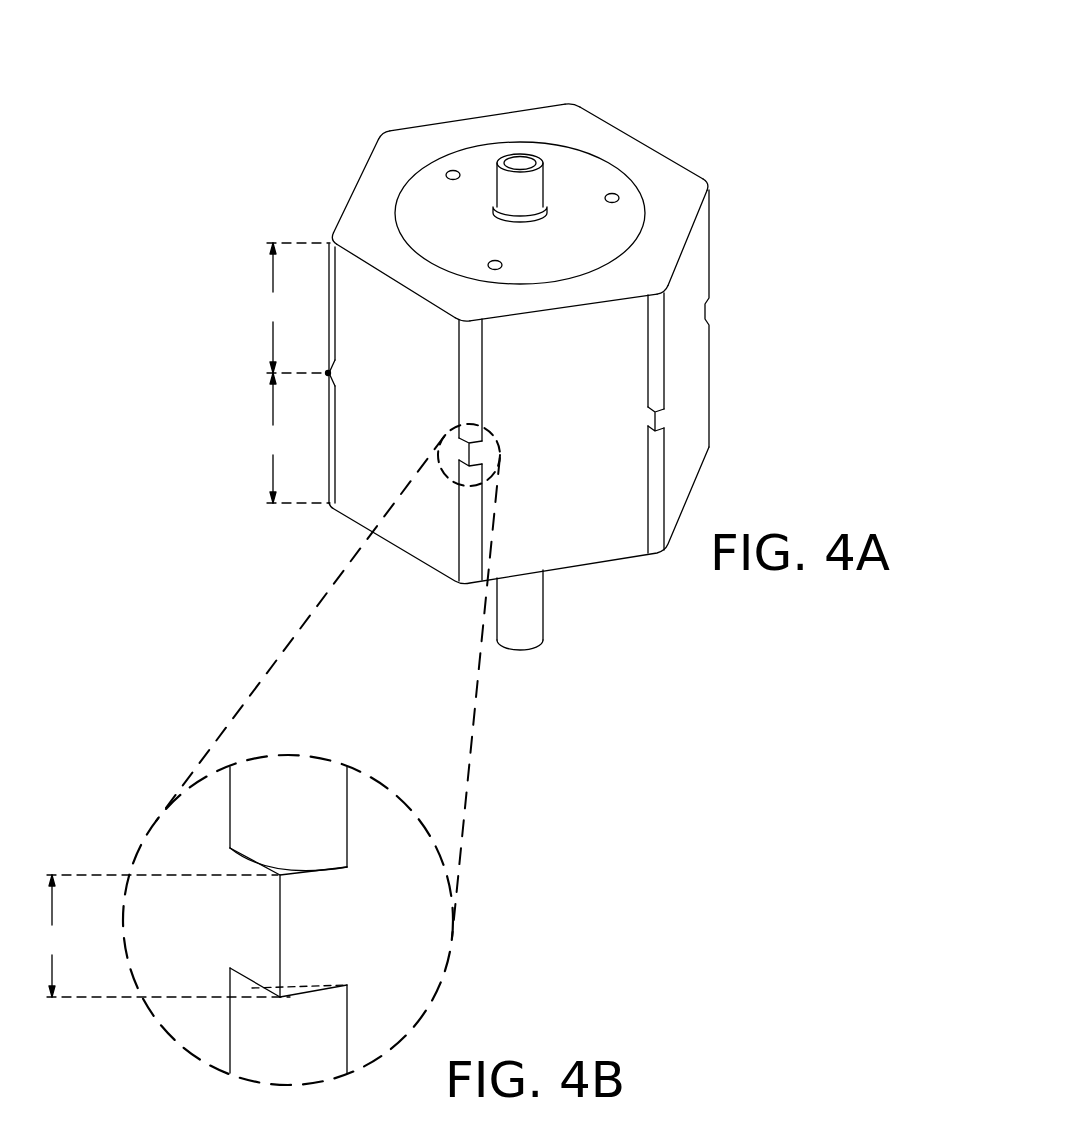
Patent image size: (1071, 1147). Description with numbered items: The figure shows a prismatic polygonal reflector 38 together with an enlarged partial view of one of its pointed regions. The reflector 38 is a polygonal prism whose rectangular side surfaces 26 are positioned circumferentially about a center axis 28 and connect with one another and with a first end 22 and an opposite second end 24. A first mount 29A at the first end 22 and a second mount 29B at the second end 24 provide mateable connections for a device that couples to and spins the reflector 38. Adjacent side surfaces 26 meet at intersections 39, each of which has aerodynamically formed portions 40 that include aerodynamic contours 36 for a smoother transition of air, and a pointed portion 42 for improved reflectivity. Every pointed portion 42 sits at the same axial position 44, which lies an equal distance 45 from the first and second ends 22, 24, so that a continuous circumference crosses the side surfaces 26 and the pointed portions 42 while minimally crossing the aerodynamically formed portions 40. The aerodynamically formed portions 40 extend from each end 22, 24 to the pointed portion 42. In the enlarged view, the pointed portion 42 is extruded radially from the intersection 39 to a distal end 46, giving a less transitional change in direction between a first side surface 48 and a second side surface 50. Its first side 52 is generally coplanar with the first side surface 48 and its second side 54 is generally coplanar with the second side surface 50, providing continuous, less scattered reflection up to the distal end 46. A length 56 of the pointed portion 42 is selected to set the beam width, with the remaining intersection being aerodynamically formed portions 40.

In FIG. 4A, the first end 22 is at (418, 139).
In FIG. 4A, the second end 24 is at (414, 557).
In FIG. 4A, the side surfaces 26 is at (473, 116).
In FIG. 4B, the side surfaces 26 is at (428, 985).
In FIG. 4A, the center axis 28 is at (521, 161).
In FIG. 4A, the first mount 29A is at (518, 164).
In FIG. 4A, the second mount 29B is at (516, 651).
In FIG. 4A, the aerodynamic contours 36 is at (711, 245).
In FIG. 4B, the aerodynamic contours 36 is at (343, 777).
In FIG. 4A, the prismatic polygonal reflector 38 is at (692, 95).
In FIG. 4A, the intersections 39 is at (574, 104).
In FIG. 4B, the intersections 39 is at (288, 762).
In FIG. 4A, the aerodynamically formed portions 40 is at (711, 217).
In FIG. 4B, the aerodynamically formed portions 40 is at (238, 777).
In FIG. 4A, the pointed portion 42 is at (710, 311).
In FIG. 4B, the pointed portion 42 is at (279, 909).
In FIG. 4A, the axial position 44 is at (326, 372).
In FIG. 4A, the equal distance 45 is at (293, 373).
In FIG. 4B, the distal end 46 is at (281, 936).
In FIG. 4B, the first side surface 48 is at (158, 900).
In FIG. 4B, the second side surface 50 is at (437, 910).
In FIG. 4B, the first side 52 is at (260, 962).
In FIG. 4B, the second side 54 is at (310, 967).
In FIG. 4B, the length 56 is at (161, 936).